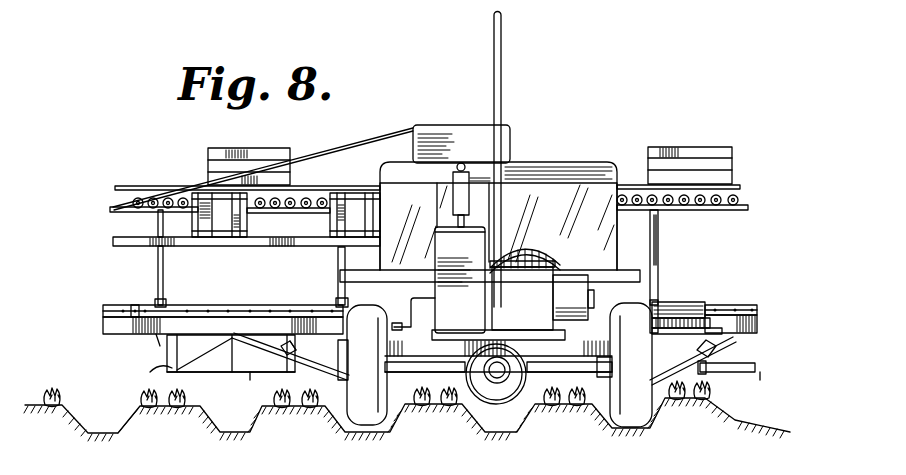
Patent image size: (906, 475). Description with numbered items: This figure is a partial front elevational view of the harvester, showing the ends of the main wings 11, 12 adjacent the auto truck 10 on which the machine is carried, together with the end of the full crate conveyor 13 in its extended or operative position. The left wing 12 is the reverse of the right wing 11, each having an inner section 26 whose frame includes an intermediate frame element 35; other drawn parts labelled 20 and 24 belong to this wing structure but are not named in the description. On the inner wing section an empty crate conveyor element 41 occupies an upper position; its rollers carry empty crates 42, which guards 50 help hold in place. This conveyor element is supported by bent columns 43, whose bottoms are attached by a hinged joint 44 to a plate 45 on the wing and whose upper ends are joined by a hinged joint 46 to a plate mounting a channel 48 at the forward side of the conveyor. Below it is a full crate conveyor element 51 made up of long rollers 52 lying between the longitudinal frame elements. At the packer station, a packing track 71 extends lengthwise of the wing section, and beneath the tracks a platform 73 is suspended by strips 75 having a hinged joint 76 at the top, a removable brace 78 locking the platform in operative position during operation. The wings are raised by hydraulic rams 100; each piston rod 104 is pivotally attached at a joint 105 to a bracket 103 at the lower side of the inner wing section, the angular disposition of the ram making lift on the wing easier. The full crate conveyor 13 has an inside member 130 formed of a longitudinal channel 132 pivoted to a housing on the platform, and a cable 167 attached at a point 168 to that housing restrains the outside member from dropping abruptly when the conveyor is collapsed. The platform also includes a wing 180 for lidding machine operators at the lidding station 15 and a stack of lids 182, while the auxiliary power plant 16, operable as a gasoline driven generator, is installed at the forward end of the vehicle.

The auto truck 10 is at (605, 158).
The main wing 11 is at (84, 319).
The main wing 12 is at (762, 187).
The full crate conveyor 13 is at (286, 254).
The lidding station 15 is at (516, 136).
The power plant 16 is at (572, 273).
The tool bar 20 is at (198, 306).
The beam 24 is at (112, 332).
The inner section 26 is at (145, 340).
The intermediate frame element 35 is at (135, 306).
The empty crate conveyor element 41 is at (136, 216).
The empty crates 42 is at (258, 150).
The bent columns 43 is at (163, 283).
The hinged joint 44 is at (165, 300).
The plate 45 is at (156, 335).
The hinged joint 46 is at (160, 213).
The channel 48 is at (122, 206).
The guards 50 is at (155, 187).
The full crate conveyor element 51 is at (110, 308).
The long rollers 52 is at (236, 306).
The packing track 71 is at (238, 373).
The platform 73 is at (258, 394).
The strips 75 is at (199, 352).
The hinged joint 76 is at (171, 347).
The removable brace 78 is at (155, 371).
The hydraulic cylinders or rams 100 is at (293, 433).
The bracket 103 is at (262, 346).
The piston rod 104 is at (293, 346).
The joint 105 is at (283, 352).
The inside member 130 is at (326, 250).
The longitudinal channel 132 is at (247, 246).
The cable 167 is at (381, 136).
The attachment point 168 is at (414, 126).
The wing 180 is at (690, 345).
The stack of lids 182 is at (695, 298).